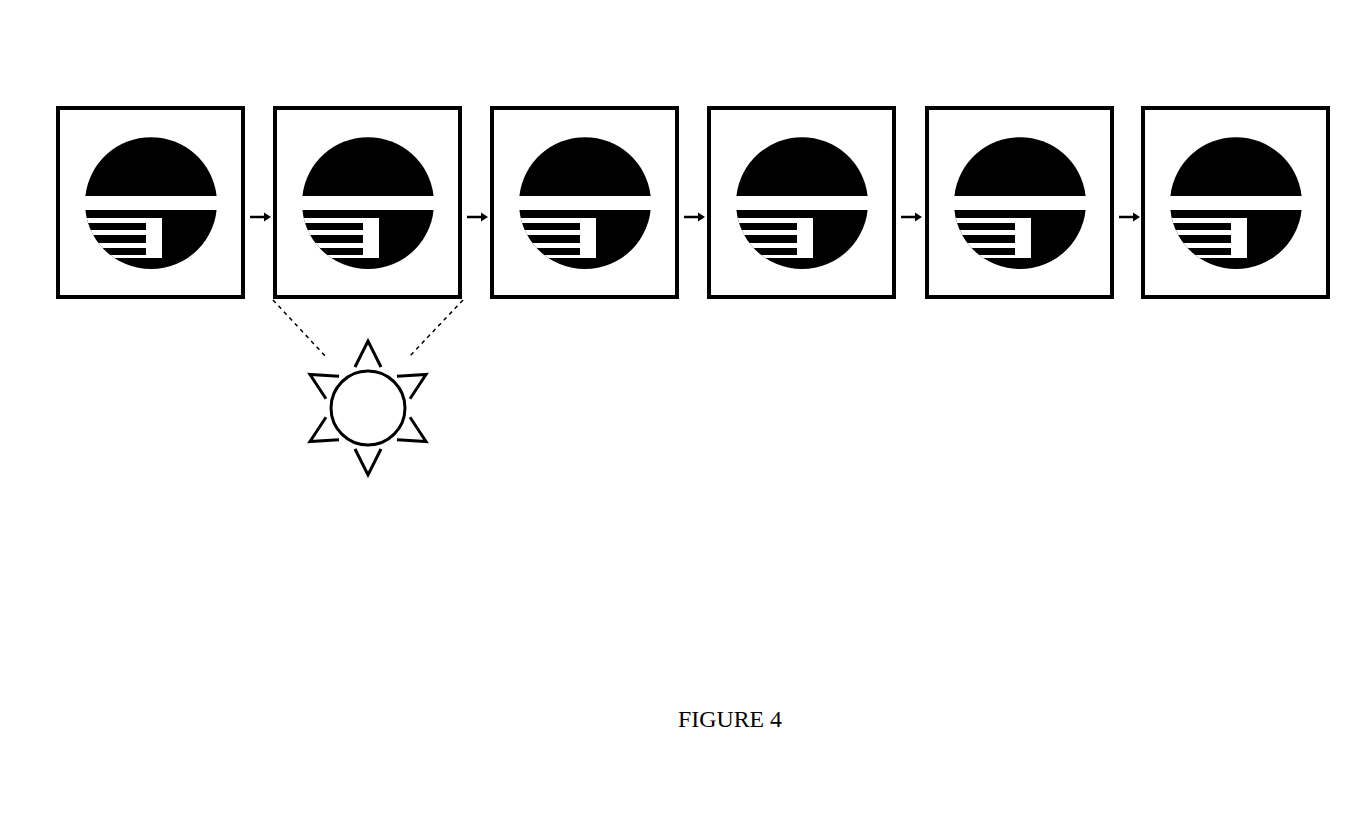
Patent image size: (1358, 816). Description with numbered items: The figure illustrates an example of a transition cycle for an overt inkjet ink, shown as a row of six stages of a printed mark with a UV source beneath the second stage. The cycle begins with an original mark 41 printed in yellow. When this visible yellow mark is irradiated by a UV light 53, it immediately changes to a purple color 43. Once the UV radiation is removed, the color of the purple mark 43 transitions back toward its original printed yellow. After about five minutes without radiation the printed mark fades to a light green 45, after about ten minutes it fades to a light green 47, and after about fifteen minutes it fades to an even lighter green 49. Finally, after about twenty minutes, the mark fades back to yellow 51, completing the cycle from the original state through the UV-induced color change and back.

The original mark 41 is at (173, 102).
The purple mark 43 is at (357, 102).
The light green mark 45 is at (578, 102).
The light green mark 47 is at (780, 102).
The lighter green mark 49 is at (1009, 102).
The yellow mark 51 is at (1230, 102).
The UV light 53 is at (430, 407).